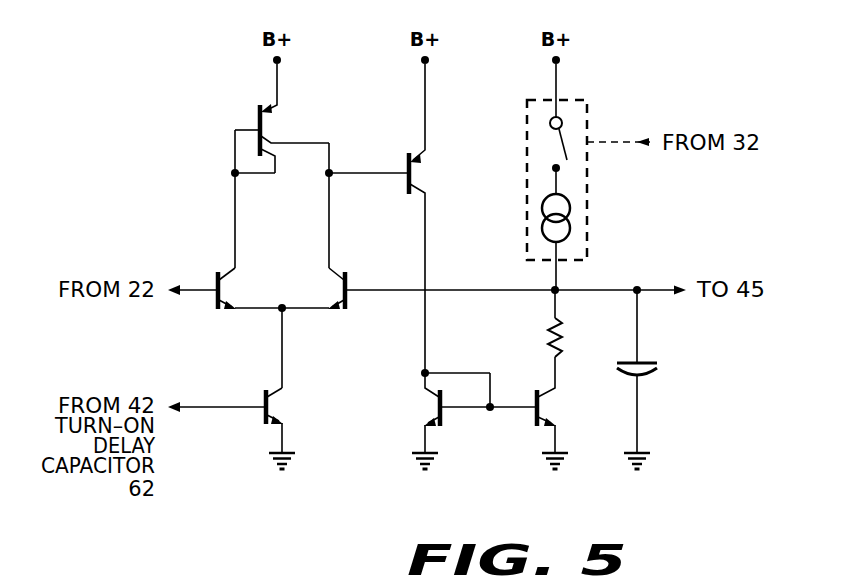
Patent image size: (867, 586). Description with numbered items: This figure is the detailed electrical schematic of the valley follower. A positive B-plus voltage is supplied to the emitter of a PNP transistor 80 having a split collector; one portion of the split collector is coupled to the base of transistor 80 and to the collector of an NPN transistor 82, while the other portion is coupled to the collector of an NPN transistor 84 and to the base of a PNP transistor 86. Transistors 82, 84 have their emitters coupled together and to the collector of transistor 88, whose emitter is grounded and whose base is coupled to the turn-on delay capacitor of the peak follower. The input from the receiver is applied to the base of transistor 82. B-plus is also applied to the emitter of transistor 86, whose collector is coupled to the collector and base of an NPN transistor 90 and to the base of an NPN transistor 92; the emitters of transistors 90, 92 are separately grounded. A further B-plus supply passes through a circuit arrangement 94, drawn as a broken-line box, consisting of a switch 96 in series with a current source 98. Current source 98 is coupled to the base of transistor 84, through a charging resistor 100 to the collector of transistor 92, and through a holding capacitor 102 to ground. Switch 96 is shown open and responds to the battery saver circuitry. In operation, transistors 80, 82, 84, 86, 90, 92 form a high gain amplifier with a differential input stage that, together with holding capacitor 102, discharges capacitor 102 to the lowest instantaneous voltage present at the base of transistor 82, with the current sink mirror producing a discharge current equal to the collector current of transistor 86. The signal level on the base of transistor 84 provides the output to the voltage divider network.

The PNP transistor 80 is at (250, 110).
The NPN transistor 82 is at (209, 278).
The NPN transistor 84 is at (355, 278).
The PNP transistor 86 is at (433, 170).
The transistor 88 is at (283, 410).
The NPN transistor 90 is at (420, 406).
The NPN transistor 92 is at (560, 408).
The circuit arrangement 94 is at (525, 190).
The switch 96 is at (553, 143).
The current source 98 is at (577, 218).
The charging resistor 100 is at (540, 337).
The holding capacitor 102 is at (666, 366).